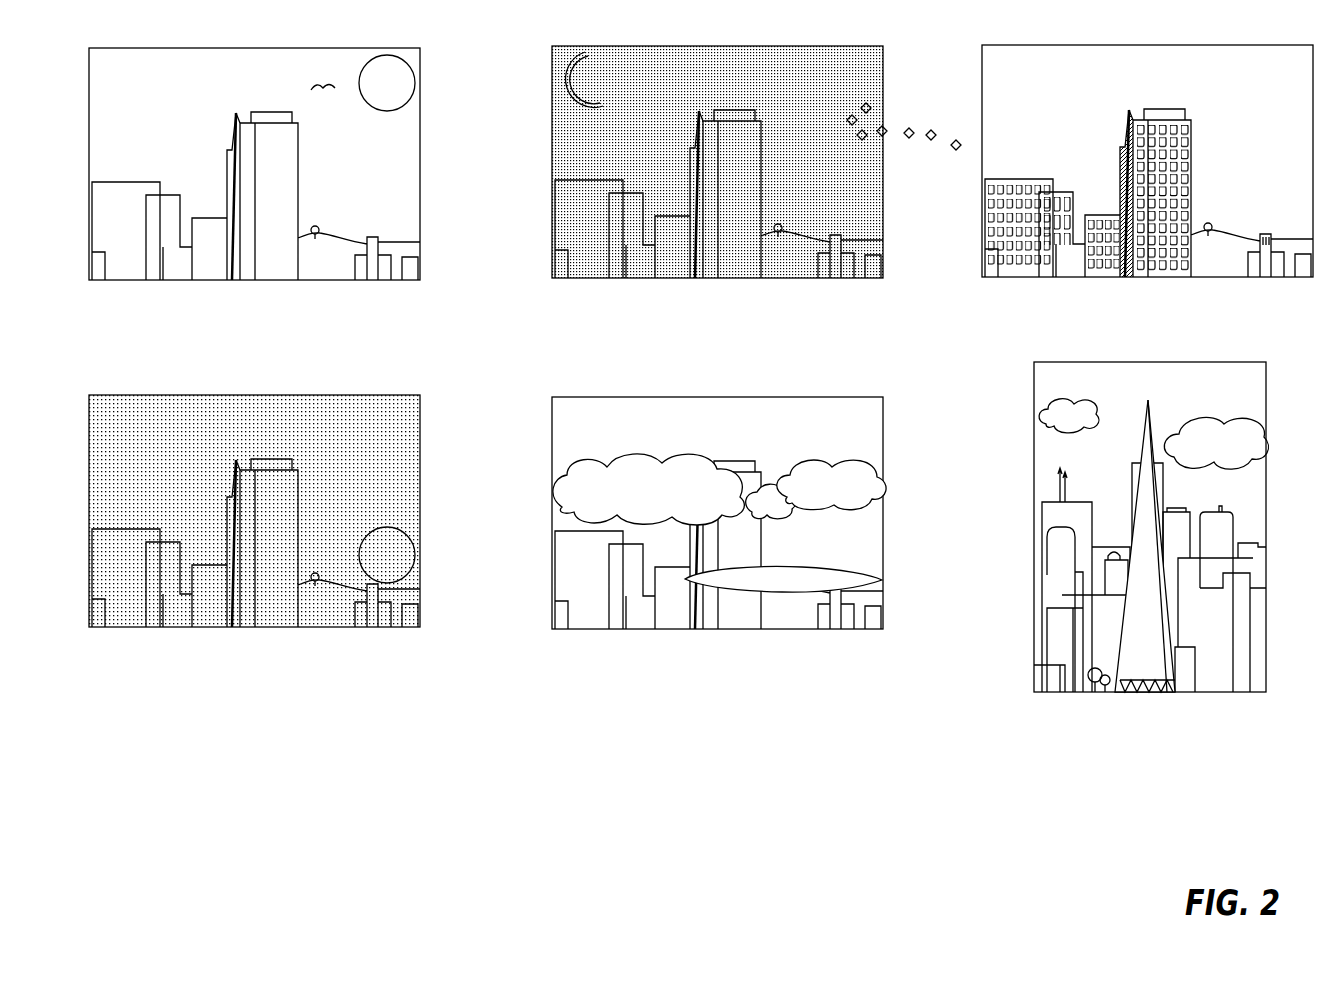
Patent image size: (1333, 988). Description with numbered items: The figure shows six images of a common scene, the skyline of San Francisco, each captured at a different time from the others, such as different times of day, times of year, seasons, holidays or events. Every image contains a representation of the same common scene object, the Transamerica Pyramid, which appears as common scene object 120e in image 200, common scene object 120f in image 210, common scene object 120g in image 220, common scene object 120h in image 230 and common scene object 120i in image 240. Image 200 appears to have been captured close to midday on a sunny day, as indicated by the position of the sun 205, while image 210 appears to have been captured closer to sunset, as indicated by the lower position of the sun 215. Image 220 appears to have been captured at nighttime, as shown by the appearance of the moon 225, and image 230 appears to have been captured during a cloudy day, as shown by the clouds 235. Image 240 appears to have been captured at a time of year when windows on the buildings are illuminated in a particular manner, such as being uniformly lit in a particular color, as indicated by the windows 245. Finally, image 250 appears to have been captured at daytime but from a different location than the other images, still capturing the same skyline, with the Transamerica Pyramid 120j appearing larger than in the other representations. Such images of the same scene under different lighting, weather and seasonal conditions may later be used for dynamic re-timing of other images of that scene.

The image 200 is at (255, 147).
The sun 205 is at (423, 86).
The image 210 is at (243, 493).
The sun 215 is at (411, 525).
The image 220 is at (723, 139).
The moon 225 is at (614, 53).
The image 230 is at (686, 486).
The clouds 235 is at (719, 468).
The image 240 is at (1115, 143).
The windows 245 is at (1207, 182).
The image 250 is at (1112, 526).
The common scene object 120e is at (210, 196).
The common scene object 120f is at (210, 543).
The common scene object 120g is at (673, 194).
The common scene object 120h is at (673, 545).
The common scene object 120i is at (1103, 193).
The Transamerica Pyramid 120j is at (1131, 546).